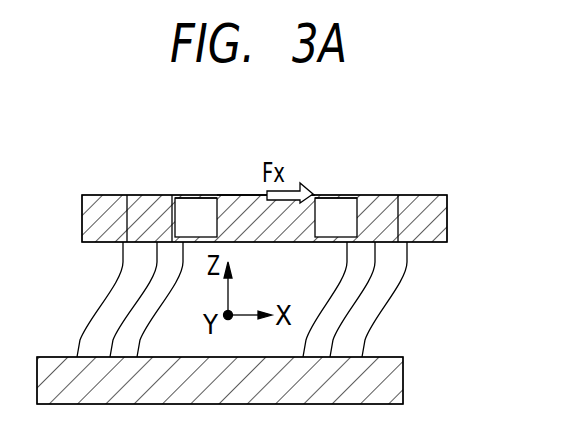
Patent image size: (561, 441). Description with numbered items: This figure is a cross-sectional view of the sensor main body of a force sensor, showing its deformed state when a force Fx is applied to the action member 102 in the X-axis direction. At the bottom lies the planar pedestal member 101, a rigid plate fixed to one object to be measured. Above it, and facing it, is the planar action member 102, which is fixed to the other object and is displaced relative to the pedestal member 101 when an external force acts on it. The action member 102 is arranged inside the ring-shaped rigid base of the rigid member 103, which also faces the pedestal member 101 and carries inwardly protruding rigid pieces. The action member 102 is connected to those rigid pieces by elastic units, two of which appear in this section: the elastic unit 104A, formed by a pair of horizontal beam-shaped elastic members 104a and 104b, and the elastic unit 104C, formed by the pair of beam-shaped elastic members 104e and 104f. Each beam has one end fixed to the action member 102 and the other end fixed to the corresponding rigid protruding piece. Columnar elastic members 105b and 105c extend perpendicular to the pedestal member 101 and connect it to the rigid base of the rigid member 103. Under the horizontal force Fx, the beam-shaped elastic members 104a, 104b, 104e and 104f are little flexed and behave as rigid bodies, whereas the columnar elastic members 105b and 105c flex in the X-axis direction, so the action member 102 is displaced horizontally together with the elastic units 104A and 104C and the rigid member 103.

The pedestal member 101 is at (398, 385).
The action member 102 is at (235, 197).
The rigid member 103 is at (443, 223).
The elastic unit 104A is at (408, 167).
The beam-shaped elastic member 104a is at (330, 198).
The beam-shaped elastic member 104b is at (347, 237).
The elastic unit 104C is at (123, 167).
The beam-shaped elastic member 104e is at (200, 198).
The beam-shaped elastic member 104f is at (183, 237).
The columnar elastic member 105b is at (378, 307).
The columnar elastic member 105c is at (100, 300).